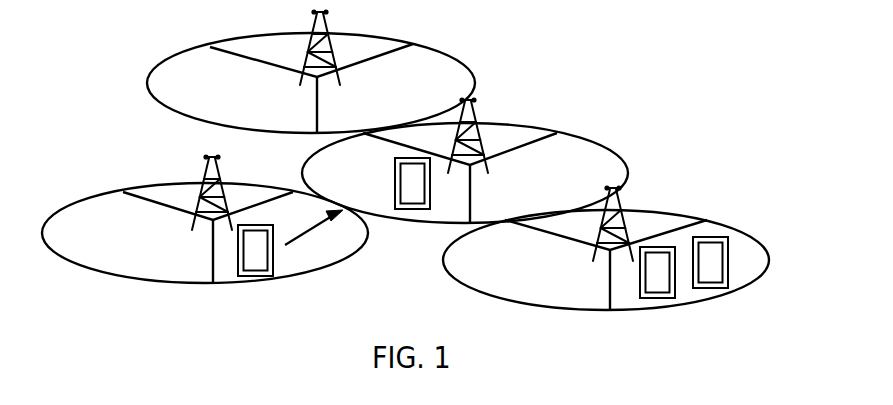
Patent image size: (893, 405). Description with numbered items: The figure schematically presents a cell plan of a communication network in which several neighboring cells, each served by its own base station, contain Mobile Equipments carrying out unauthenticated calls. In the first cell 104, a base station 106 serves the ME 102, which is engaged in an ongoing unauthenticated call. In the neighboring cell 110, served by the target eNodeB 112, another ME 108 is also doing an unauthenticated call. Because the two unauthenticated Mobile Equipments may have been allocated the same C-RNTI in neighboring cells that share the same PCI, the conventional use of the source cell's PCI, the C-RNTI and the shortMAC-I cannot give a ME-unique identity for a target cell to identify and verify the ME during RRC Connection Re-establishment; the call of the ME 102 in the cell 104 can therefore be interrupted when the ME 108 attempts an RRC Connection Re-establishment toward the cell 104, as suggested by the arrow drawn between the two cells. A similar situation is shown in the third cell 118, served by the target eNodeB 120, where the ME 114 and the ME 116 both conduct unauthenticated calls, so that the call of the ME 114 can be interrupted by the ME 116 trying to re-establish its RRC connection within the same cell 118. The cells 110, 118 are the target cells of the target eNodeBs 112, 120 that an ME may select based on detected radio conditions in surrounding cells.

The ME 102 is at (232, 263).
The cell 104 is at (316, 264).
The first base station 106 is at (205, 177).
The ME 108 is at (415, 212).
The cell 110 is at (317, 170).
The target eNodeB 112 is at (478, 116).
The ME 114 is at (657, 298).
The ME 116 is at (710, 293).
The cell 118 is at (748, 246).
The target eNodeB 120 is at (625, 218).